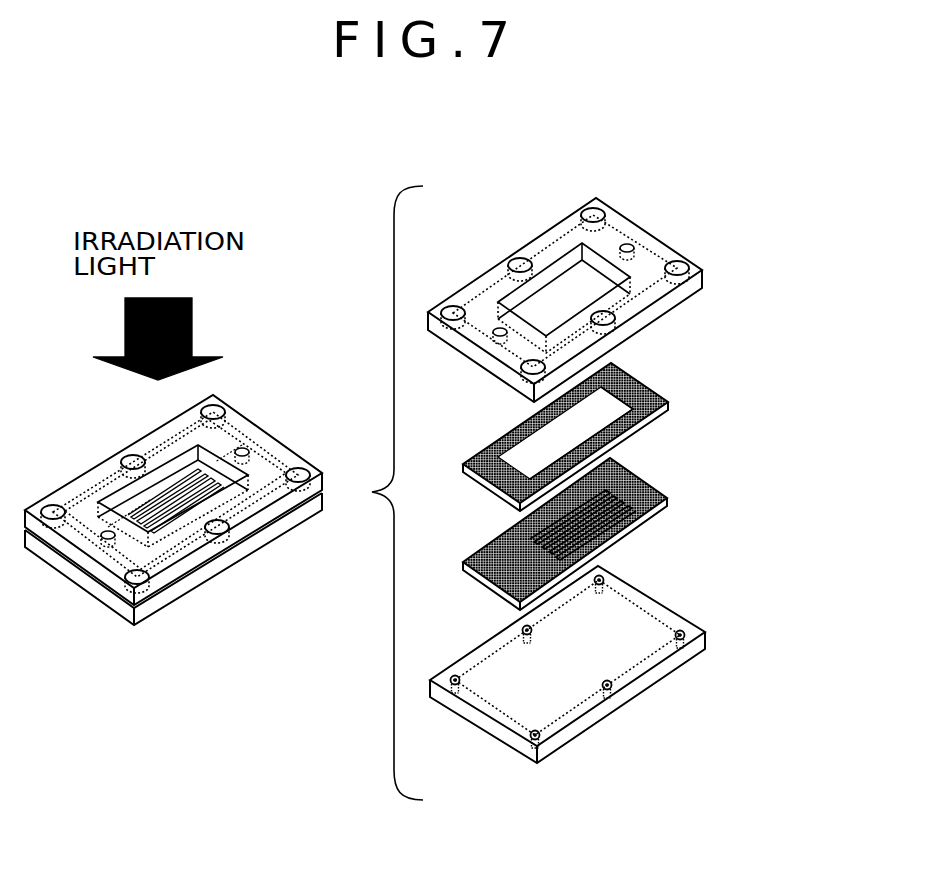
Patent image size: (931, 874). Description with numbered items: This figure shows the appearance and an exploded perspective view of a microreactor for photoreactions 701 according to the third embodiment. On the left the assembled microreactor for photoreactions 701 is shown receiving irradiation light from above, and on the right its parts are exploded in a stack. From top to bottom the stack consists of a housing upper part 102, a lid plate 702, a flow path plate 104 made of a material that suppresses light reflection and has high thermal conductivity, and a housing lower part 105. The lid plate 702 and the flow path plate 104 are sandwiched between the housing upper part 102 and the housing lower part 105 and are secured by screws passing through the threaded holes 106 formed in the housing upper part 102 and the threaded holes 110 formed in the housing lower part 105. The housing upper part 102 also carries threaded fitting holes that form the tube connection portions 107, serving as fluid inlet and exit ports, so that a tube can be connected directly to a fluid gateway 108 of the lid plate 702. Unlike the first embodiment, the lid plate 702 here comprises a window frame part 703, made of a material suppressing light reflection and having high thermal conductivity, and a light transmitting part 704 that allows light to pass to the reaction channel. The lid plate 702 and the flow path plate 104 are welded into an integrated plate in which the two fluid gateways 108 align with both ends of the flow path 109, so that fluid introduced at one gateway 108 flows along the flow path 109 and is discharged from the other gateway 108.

The housing upper part 102 is at (663, 297).
The flow path plate 104 is at (662, 507).
The housing lower part 105 is at (670, 667).
The threaded holes 106 is at (596, 212).
The tube connection portions 107 is at (640, 250).
The fluid gateway 108 is at (663, 393).
The flow path 109 is at (623, 533).
The threaded holes 110 is at (612, 687).
The microreactor for photoreactions 701 is at (235, 395).
The lid plate 702 is at (688, 422).
The window frame part 703 is at (668, 402).
The light transmitting part 704 is at (637, 421).